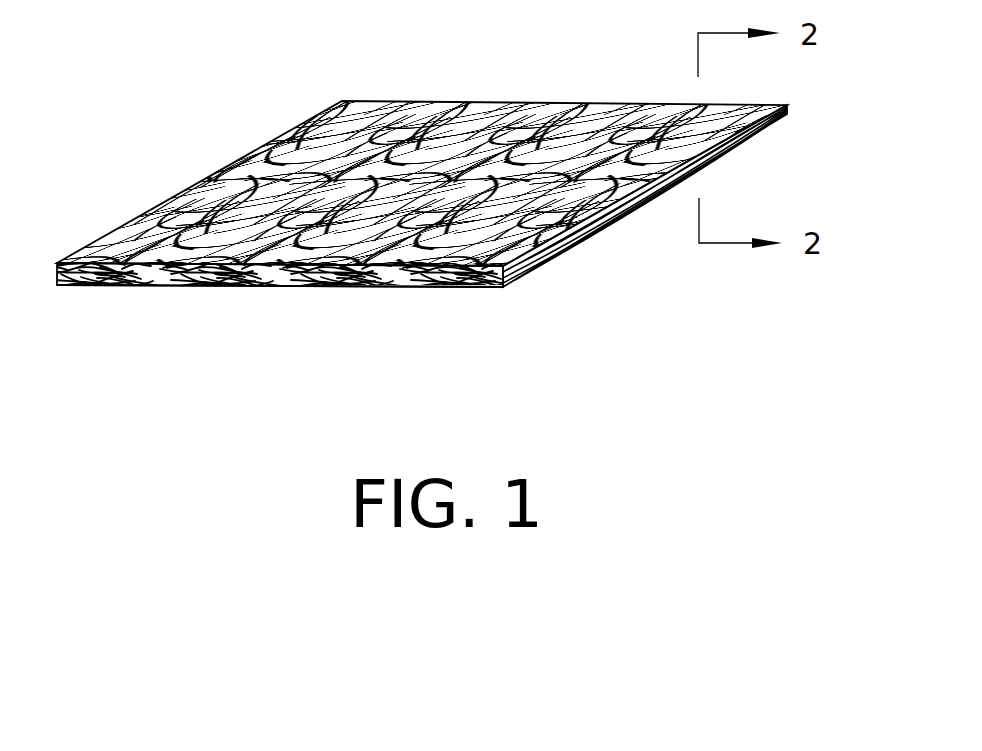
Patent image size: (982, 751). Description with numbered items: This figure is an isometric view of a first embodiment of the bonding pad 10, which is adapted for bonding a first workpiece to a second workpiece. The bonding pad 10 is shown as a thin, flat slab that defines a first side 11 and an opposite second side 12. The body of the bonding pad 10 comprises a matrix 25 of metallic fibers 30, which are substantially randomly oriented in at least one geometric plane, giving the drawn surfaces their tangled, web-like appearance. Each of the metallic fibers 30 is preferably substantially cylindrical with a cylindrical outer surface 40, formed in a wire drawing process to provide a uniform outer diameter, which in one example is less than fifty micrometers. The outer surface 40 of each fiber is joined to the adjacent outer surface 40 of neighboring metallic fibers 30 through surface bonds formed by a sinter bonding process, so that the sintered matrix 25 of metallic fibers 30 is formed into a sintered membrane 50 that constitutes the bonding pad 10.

The bonding pad 10 is at (537, 267).
The first side 11 is at (510, 287).
The second side 12 is at (587, 245).
The matrix 25 is at (115, 287).
The metallic fibers 30 is at (173, 287).
The cylindrical outer surface 40 is at (352, 287).
The sintered membrane 50 is at (248, 287).